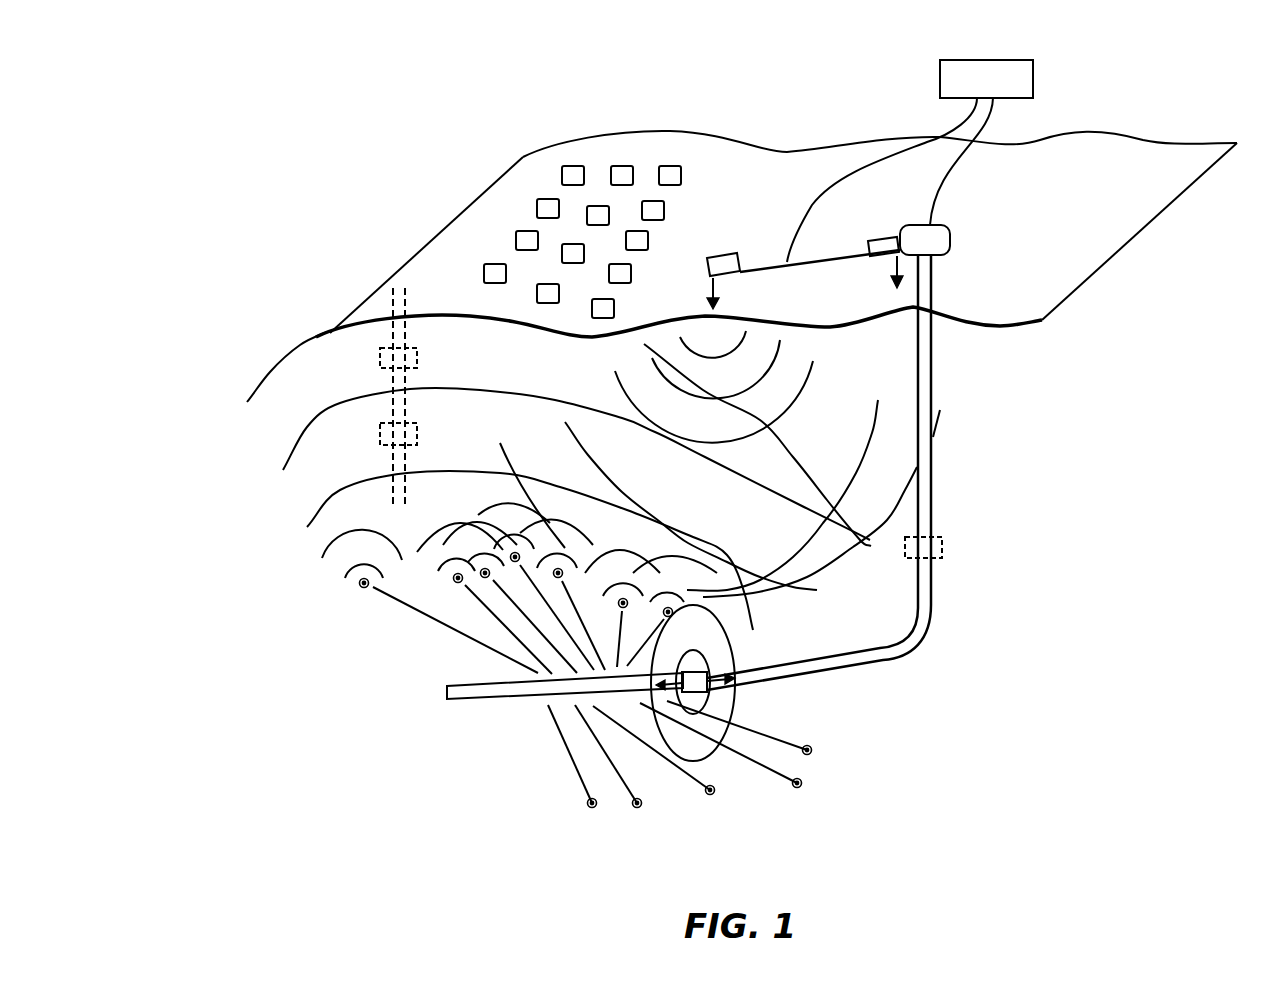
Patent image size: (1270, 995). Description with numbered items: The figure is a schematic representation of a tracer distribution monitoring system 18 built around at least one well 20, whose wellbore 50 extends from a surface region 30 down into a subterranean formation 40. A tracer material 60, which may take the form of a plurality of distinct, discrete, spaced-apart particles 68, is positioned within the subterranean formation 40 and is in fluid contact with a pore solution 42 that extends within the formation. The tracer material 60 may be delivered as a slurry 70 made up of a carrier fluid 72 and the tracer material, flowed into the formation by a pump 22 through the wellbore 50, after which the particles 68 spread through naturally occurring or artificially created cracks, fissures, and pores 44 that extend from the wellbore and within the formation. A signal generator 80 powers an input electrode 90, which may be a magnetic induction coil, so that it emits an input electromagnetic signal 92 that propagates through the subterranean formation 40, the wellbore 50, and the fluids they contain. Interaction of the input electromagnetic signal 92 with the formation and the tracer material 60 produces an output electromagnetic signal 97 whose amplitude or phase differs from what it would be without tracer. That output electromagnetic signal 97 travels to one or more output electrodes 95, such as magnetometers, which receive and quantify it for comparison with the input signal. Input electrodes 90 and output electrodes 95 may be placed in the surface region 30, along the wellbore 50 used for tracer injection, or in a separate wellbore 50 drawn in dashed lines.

The tracer distribution monitoring system 18 is at (232, 114).
The well 20 is at (336, 298).
The pump 22 is at (947, 228).
The surface region 30 is at (798, 111).
The subterranean formation 40 is at (968, 469).
The pore solution 42 is at (406, 654).
The pores 44 is at (612, 714).
The wellbore 50 is at (390, 464).
The tracer material 60 is at (697, 791).
The particles 68 is at (803, 783).
The slurry 70 is at (896, 662).
The carrier fluid 72 is at (840, 670).
The signal generator 80 is at (973, 89).
The input electrode 90 is at (712, 260).
The input electromagnetic signal 92 is at (800, 386).
The output electrode 95 is at (562, 176).
The output electromagnetic signal 97 is at (327, 524).